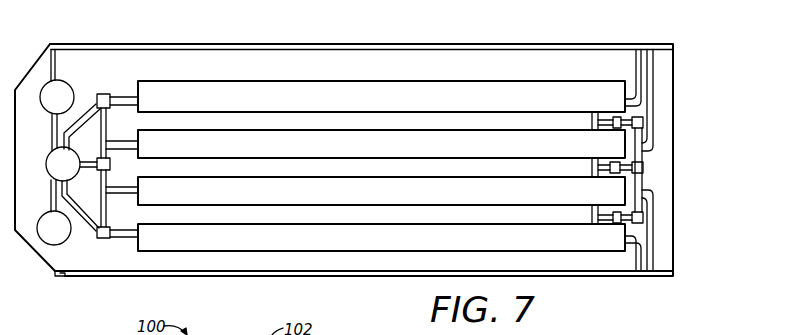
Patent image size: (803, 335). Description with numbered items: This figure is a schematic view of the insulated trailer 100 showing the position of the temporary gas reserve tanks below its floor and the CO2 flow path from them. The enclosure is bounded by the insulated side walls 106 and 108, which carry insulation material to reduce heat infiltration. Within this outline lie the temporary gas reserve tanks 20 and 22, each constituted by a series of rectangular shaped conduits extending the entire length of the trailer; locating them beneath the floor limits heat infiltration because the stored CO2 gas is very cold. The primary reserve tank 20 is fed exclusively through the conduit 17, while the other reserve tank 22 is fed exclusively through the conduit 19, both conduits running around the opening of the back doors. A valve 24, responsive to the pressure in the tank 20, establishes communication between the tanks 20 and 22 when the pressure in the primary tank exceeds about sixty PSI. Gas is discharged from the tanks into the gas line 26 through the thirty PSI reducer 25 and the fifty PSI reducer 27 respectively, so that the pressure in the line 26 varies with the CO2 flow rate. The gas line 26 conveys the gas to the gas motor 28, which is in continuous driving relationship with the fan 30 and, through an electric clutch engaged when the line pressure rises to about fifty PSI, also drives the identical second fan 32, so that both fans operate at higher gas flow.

The trailer 100 is at (614, 22).
The side wall 106 is at (357, 44).
The side wall 108 is at (162, 277).
The fan 32 is at (66, 106).
The gas motor 28 is at (72, 173).
The fan 30 is at (63, 237).
The reducer 27 is at (104, 95).
The reducer 25 is at (99, 158).
The gas line 26 is at (123, 188).
The temporary gas reserve tank 22 is at (381, 166).
The temporary gas reserve tank 20 is at (381, 167).
The conduit 19 is at (636, 70).
The conduit 17 is at (654, 141).
The valve 24 is at (645, 170).